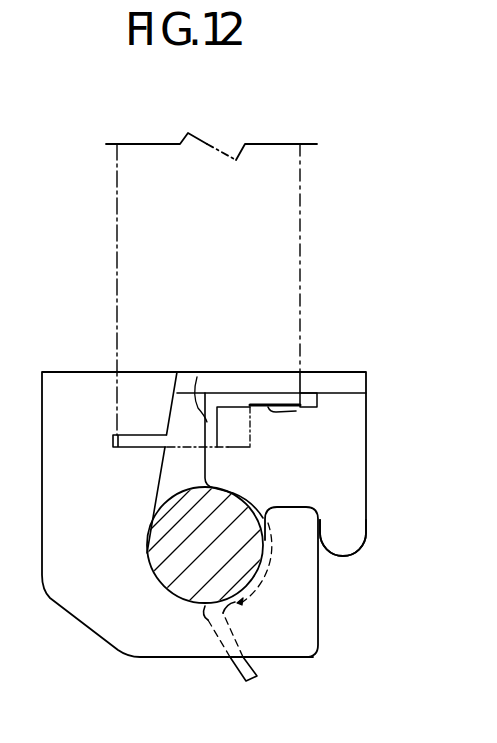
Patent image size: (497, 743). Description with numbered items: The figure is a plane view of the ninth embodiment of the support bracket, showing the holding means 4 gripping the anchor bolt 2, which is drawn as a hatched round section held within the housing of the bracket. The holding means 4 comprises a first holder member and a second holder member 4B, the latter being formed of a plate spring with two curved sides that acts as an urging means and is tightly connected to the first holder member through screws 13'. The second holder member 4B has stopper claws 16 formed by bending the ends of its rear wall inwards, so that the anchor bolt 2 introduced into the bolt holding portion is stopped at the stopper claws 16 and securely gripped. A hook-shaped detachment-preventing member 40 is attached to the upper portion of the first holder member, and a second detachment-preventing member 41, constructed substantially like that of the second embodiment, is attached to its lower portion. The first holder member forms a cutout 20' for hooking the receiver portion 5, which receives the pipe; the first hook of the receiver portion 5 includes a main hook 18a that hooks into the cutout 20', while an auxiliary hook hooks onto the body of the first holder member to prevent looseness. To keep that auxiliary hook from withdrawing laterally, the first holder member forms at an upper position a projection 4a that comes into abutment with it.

The anchor bolt 2 is at (150, 574).
The holding means 4 is at (74, 372).
The projection 4a is at (339, 384).
The second holder member 4B is at (199, 376).
The receiver portion 5 is at (285, 290).
The retaining plate 13' is at (341, 411).
The stopper claws 16 is at (255, 495).
The main hook 18a is at (230, 449).
The cutout 20' is at (113, 482).
The hook-shaped detachment-preventing member 40 is at (312, 608).
The second detachment-preventing member 41 is at (360, 531).